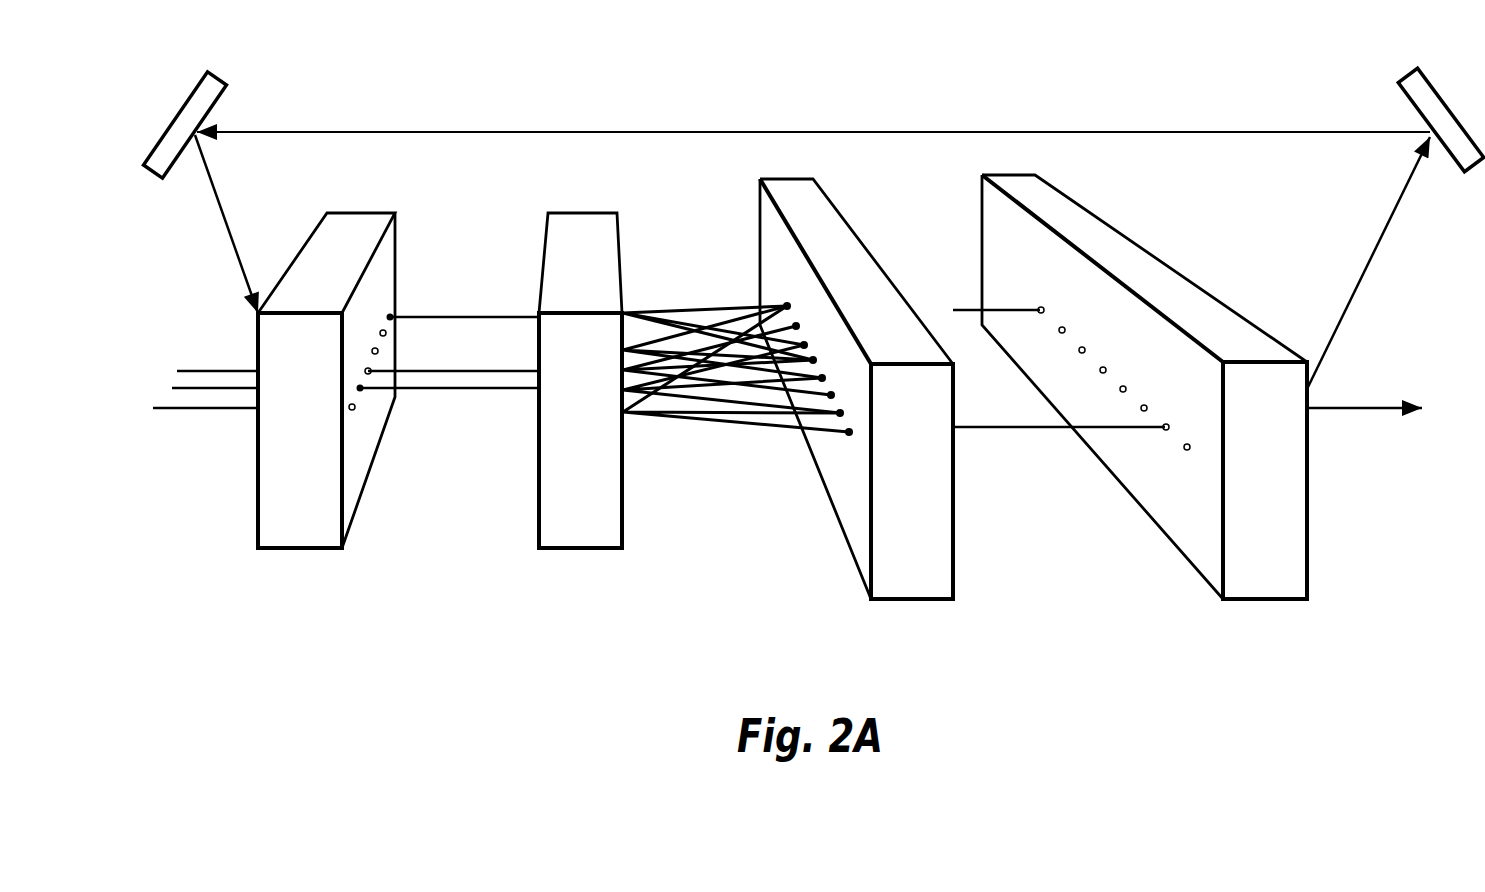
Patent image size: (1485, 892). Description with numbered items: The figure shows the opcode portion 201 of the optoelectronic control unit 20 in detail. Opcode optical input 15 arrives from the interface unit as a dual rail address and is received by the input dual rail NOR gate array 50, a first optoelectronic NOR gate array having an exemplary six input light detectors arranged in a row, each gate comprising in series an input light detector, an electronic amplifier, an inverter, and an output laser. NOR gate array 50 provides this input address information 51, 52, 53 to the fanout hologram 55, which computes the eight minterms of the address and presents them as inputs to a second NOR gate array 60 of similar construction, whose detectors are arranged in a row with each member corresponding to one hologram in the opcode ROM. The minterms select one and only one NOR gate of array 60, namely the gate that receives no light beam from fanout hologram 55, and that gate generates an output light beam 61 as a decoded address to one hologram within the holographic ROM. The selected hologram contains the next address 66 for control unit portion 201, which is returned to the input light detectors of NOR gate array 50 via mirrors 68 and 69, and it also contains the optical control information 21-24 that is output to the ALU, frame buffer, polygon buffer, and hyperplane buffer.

The opcode optical input 15 is at (196, 371).
The optoelectronic control unit 20 is at (771, 619).
The optical control information 21-24 is at (1412, 412).
The input dual rail NOR gate array 50 is at (278, 548).
The input address information 51 is at (413, 317).
The input address information 52 is at (487, 371).
The input address information 53 is at (450, 388).
The fanout hologram 55 is at (556, 548).
The second NOR gate array 60 is at (873, 599).
The output light beam 61 is at (1044, 427).
The next address 66 is at (1360, 287).
The mirror 68 is at (1407, 102).
The mirror 69 is at (212, 106).
The opcode portion 201 is at (1230, 697).